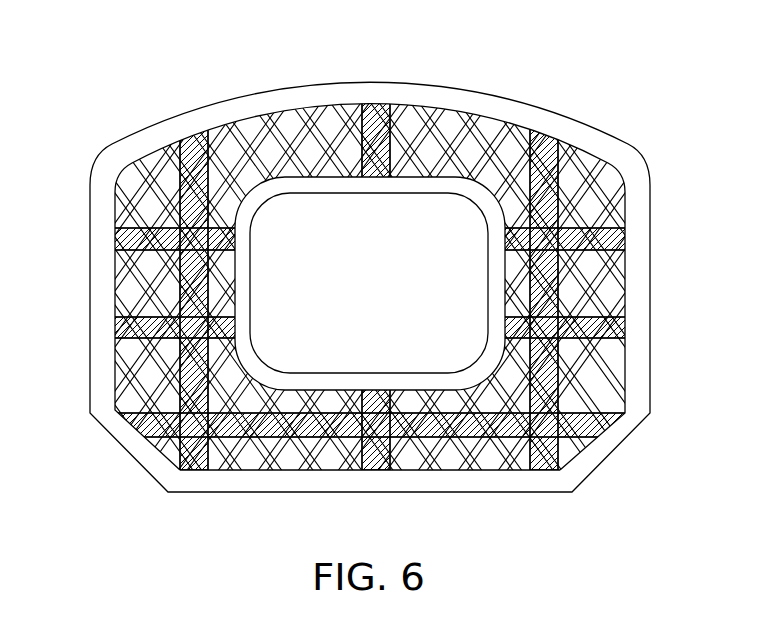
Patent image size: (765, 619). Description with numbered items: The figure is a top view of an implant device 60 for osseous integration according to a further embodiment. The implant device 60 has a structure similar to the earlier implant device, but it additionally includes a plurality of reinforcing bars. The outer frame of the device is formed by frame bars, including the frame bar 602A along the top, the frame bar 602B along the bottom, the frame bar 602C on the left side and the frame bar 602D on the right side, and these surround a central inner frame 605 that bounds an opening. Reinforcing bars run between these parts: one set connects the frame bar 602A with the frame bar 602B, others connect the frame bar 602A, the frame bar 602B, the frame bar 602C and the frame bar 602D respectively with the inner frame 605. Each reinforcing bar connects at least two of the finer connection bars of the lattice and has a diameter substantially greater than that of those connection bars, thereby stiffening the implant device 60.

The implant device 60 is at (41, 33).
The inner frame 605 is at (308, 183).
The frame bar 602A is at (342, 98).
The frame bar 602B is at (315, 481).
The frame bar 602C is at (100, 370).
The frame bar 602D is at (637, 353).